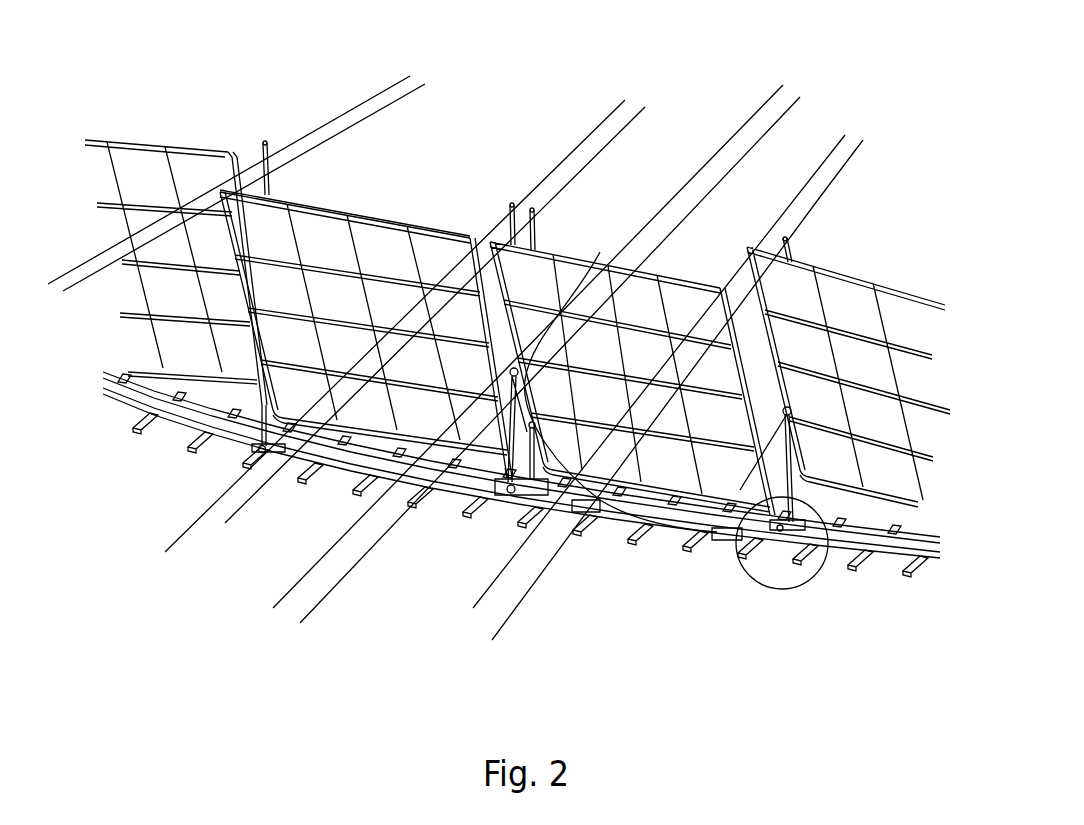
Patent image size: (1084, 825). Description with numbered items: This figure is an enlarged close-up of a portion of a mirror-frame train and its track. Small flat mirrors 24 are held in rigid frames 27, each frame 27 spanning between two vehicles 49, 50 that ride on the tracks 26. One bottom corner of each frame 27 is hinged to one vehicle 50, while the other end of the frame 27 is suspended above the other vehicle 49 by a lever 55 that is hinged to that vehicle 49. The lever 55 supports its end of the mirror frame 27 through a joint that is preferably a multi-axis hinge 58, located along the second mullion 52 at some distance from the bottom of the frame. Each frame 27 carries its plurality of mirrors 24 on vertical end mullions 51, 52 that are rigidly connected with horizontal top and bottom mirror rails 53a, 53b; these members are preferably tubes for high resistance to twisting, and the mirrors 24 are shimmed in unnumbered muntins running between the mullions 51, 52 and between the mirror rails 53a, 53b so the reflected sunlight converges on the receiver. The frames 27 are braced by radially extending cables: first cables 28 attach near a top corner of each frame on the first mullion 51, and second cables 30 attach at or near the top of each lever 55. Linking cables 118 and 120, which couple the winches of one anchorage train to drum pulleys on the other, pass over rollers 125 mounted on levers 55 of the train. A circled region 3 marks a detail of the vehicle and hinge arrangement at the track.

The detail area 3 is at (757, 588).
The mirror 24 is at (315, 238).
The track 26 is at (897, 557).
The frame 27 is at (842, 273).
The first cable 28 is at (365, 120).
The second cable 30 is at (325, 108).
The vehicle 49 is at (500, 490).
The vehicle 50 is at (795, 565).
The first mullion 51 is at (660, 527).
The second mullion 52 is at (770, 268).
The top mirror rail 53a is at (405, 222).
The bottom mirror rail 53b is at (337, 492).
The lever 55 is at (538, 228).
The multi-axis hinge 58 is at (587, 527).
The linking cable 118 is at (745, 132).
The linking cable 120 is at (720, 200).
The roller 125 is at (621, 379).